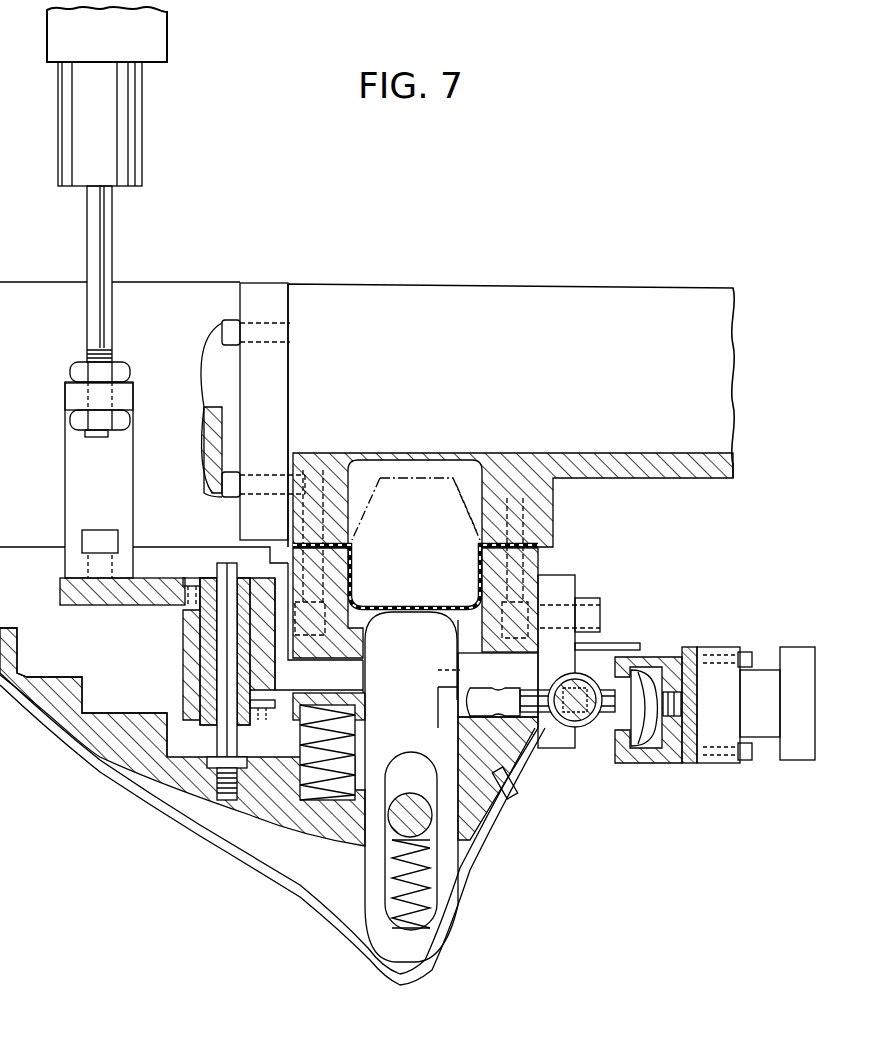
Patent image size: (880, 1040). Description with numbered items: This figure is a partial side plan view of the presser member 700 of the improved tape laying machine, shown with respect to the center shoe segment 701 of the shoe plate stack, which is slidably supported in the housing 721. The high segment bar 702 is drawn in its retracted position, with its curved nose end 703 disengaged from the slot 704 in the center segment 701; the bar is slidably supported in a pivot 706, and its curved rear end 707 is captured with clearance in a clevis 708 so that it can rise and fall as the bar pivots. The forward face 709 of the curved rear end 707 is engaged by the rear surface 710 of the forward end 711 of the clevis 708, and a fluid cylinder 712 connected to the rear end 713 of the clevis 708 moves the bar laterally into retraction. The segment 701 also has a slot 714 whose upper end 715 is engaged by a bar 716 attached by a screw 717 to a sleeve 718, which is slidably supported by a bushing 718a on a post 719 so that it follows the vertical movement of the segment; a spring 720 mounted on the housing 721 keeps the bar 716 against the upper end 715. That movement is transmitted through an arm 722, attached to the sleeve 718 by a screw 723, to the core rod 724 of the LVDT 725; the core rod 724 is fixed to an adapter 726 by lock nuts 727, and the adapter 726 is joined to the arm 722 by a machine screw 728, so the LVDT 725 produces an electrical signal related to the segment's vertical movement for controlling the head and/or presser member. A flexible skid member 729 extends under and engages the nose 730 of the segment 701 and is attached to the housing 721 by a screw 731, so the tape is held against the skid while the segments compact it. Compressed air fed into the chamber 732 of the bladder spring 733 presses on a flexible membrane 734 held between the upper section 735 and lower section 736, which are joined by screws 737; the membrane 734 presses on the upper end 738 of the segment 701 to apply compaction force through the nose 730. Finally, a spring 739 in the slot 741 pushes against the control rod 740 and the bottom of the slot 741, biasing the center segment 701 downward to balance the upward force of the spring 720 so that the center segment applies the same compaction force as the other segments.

The presser member 700 is at (116, 788).
The center shoe segment 701 is at (358, 897).
The high segment bar 702 is at (476, 556).
The curved nose end 703 is at (472, 692).
The slot 704 is at (447, 714).
The pivot 706 is at (577, 732).
The curved rear end 707 is at (647, 759).
The clevis 708 is at (700, 767).
The forward face 709 is at (620, 660).
The rear surface 710 is at (640, 757).
The forward end 711 is at (613, 759).
The fluid cylinder 712 is at (797, 761).
The rear end 713 is at (684, 662).
The slot 714 is at (372, 738).
The upper end 715 is at (387, 702).
The bar 716 is at (320, 641).
The screw 717 is at (267, 722).
The sleeve 718 is at (187, 667).
The bushing 718a is at (200, 630).
The post 719 is at (218, 742).
The spring 720 is at (260, 827).
The housing 721 is at (62, 690).
The arm 722 is at (130, 605).
The screw 723 is at (190, 572).
The core rod 724 is at (112, 243).
The LVDT 725 is at (142, 128).
The adapter 726 is at (66, 474).
The lock nuts 727 is at (70, 420).
The machine screw 728 is at (82, 541).
The flexible skid member 729 is at (470, 859).
The nose 730 is at (377, 940).
The screw 731 is at (510, 802).
The chamber 732 is at (388, 497).
The bladder spring 733 is at (478, 446).
The flexible membrane 734 is at (380, 592).
The upper section 735 is at (288, 447).
The lower section 736 is at (282, 600).
The screws 737 is at (560, 612).
The upper end 738 is at (455, 608).
The spring 739 is at (418, 932).
The control rod 740 is at (432, 803).
The slot 741 is at (380, 860).